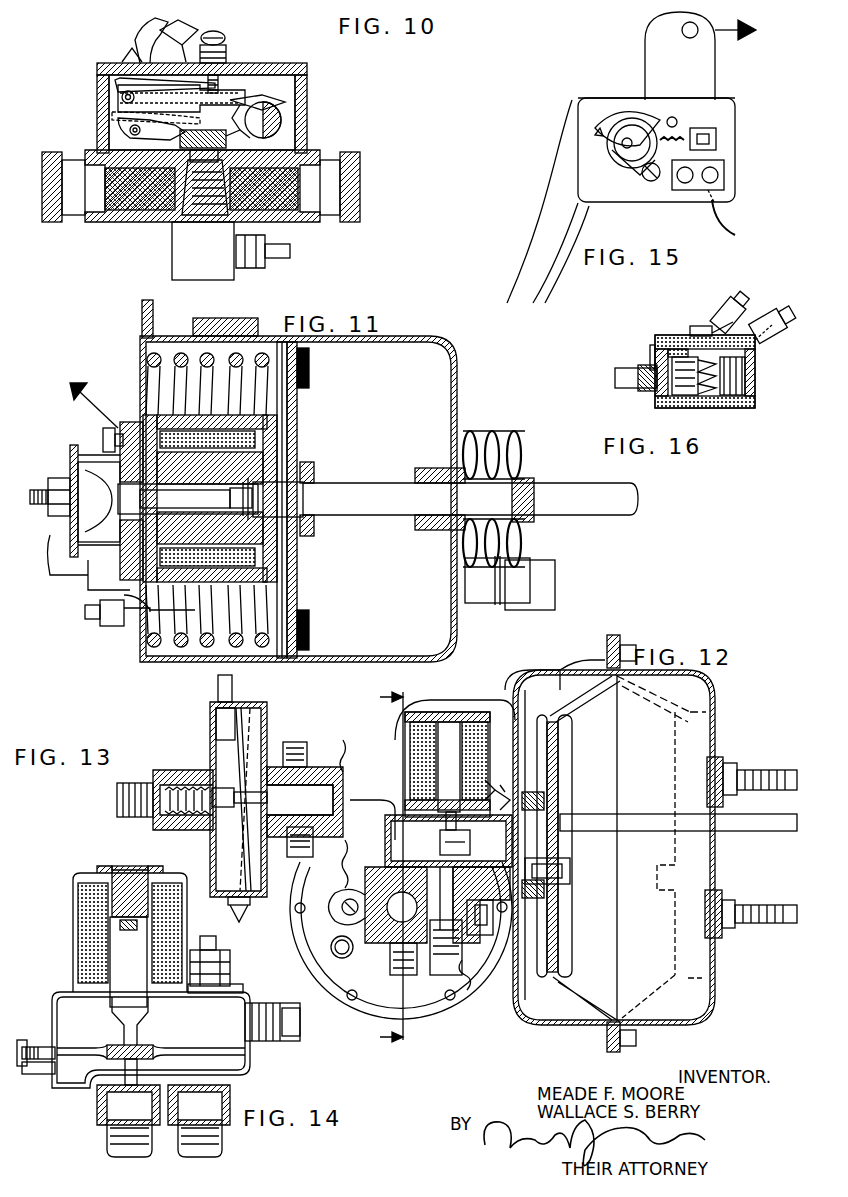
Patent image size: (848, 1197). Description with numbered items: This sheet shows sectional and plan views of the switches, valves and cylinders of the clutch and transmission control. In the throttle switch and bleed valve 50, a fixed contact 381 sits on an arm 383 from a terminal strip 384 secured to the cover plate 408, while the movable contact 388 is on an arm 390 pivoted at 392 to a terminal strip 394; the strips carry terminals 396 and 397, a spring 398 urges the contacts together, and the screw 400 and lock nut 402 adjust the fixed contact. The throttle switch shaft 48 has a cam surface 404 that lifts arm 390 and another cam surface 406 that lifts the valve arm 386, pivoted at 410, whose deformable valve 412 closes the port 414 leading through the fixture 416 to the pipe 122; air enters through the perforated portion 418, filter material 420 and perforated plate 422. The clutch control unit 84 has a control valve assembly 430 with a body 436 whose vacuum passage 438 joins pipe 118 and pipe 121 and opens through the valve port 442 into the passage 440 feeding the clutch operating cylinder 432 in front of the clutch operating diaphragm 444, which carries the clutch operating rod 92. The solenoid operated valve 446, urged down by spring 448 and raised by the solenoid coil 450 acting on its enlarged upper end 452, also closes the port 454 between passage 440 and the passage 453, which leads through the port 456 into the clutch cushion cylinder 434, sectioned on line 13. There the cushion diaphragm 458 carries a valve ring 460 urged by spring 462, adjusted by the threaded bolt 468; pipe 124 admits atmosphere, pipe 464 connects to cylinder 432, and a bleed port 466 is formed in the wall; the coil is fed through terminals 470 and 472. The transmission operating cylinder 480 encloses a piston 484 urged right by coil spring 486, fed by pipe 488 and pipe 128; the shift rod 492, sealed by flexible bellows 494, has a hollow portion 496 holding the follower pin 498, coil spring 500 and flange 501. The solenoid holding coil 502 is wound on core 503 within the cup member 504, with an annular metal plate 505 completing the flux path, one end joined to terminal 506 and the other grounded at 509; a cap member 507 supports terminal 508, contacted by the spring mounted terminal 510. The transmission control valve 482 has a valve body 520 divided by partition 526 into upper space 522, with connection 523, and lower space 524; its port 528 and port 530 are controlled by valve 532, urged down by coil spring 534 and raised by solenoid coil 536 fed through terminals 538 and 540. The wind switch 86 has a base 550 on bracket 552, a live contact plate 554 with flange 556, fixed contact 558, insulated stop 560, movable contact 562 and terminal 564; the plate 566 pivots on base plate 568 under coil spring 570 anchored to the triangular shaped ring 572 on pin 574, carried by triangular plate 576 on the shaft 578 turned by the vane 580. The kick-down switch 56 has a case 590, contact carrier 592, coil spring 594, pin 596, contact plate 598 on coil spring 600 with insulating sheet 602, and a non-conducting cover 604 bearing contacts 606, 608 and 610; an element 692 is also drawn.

In FIG. 10, the throttle switch shaft 48 is at (284, 118).
In FIG. 10, the throttle switch and bleed valve 50 is at (305, 86).
In FIG. 16, the kick-down switch 56 is at (665, 345).
In FIG. 12, the clutch control unit 84 is at (673, 636).
In FIG. 15, the wind switch 86 is at (646, 72).
In FIG. 12, the clutch operating rod 92 is at (718, 820).
In FIG. 12, the pipe 118 is at (465, 965).
In FIG. 14, the pipe 121 is at (115, 1140).
In FIG. 12, the pipe 121 is at (470, 985).
In FIG. 10, the pipe 122 is at (290, 250).
In FIG. 13, the pipe 122 is at (304, 850).
In FIG. 12, the pipe 122 is at (400, 968).
In FIG. 13, the pipe 124 is at (248, 908).
In FIG. 12, the pipe 124 is at (348, 955).
In FIG. 11, the pipe 128 is at (548, 588).
In FIG. 14, the pipe 128 is at (292, 1040).
In FIG. 12, the section line 13 is at (414, 861).
In FIG. 10, the fixed contact 381 is at (222, 140).
In FIG. 10, the arm 383 is at (156, 119).
In FIG. 10, the terminal strip 384 is at (97, 66).
In FIG. 10, the valve arm 386 is at (272, 63).
In FIG. 10, the movable contact 388 is at (250, 96).
In FIG. 10, the arm 390 is at (305, 78).
In FIG. 10, the pivot 392 is at (97, 82).
In FIG. 10, the terminal strip 394 is at (109, 98).
In FIG. 10, the terminal 396 is at (192, 24).
In FIG. 10, the terminal 397 is at (138, 32).
In FIG. 10, the spring 398 is at (122, 62).
In FIG. 10, the screw 400 is at (228, 40).
In FIG. 10, the lock nut 402 is at (228, 52).
In FIG. 10, the cam surface 404 is at (283, 104).
In FIG. 10, the cam surface 406 is at (295, 140).
In FIG. 10, the cover plate 408 is at (270, 75).
In FIG. 10, the pivot 410 is at (109, 118).
In FIG. 10, the valve 412 is at (112, 134).
In FIG. 10, the port 414 is at (203, 215).
In FIG. 10, the fixture 416 is at (185, 260).
In FIG. 10, the perforated portion 418 is at (98, 215).
In FIG. 10, the filter material 420 is at (142, 212).
In FIG. 10, the perforated plate 422 is at (130, 215).
In FIG. 12, the control valve assembly 430 is at (505, 695).
In FIG. 12, the clutch operating cylinder 432 is at (716, 702).
In FIG. 13, the clutch cushion cylinder 434 is at (268, 708).
In FIG. 12, the clutch cushion cylinder 434 is at (372, 1008).
In FIG. 13, the valve body 436 is at (332, 760).
In FIG. 12, the valve body 436 is at (432, 965).
In FIG. 12, the vacuum passage 438 is at (427, 910).
In FIG. 12, the passage 440 is at (565, 872).
In FIG. 12, the valve port 442 is at (468, 856).
In FIG. 12, the clutch operating diaphragm 444 is at (562, 722).
In FIG. 12, the solenoid operated valve 446 is at (452, 845).
In FIG. 12, the spring 448 is at (445, 712).
In FIG. 12, the solenoid coil 450 is at (535, 722).
In FIG. 12, the enlarged upper end 452 is at (449, 767).
In FIG. 13, the passage 453 is at (318, 814).
In FIG. 12, the passage 453 is at (385, 905).
In FIG. 12, the port 454 is at (448, 841).
In FIG. 13, the port 456 is at (290, 745).
In FIG. 13, the cushion diaphragm 458 is at (216, 724).
In FIG. 13, the valve ring 460 is at (218, 756).
In FIG. 13, the spring 462 is at (216, 785).
In FIG. 13, the pipe 464 is at (222, 695).
In FIG. 12, the pipe 464 is at (565, 672).
In FIG. 13, the bleed port 466 is at (212, 845).
In FIG. 13, the threaded bolt 468 is at (140, 815).
In FIG. 12, the terminal 470 is at (503, 788).
In FIG. 12, the terminal 472 is at (404, 781).
In FIG. 11, the transmission operating cylinder 480 is at (455, 392).
In FIG. 14, the transmission control valve 482 is at (75, 940).
In FIG. 11, the piston 484 is at (288, 426).
In FIG. 11, the coil spring 486 is at (142, 345).
In FIG. 11, the pipe 488 is at (72, 572).
In FIG. 14, the pipe 488 is at (185, 1148).
In FIG. 11, the shift rod 492 is at (405, 512).
In FIG. 11, the flexible bellows 494 is at (490, 430).
In FIG. 11, the hollow portion 496 is at (273, 499).
In FIG. 11, the follower pin 498 is at (188, 499).
In FIG. 11, the coil spring 500 is at (207, 498).
In FIG. 11, the flange 501 is at (232, 511).
In FIG. 11, the solenoid holding coil 502 is at (250, 410).
In FIG. 11, the core 503 is at (210, 498).
In FIG. 11, the cup member 504 is at (300, 400).
In FIG. 11, the annular metal plate 505 is at (290, 446).
In FIG. 11, the terminal 506 is at (102, 620).
In FIG. 11, the cap member 507 is at (104, 438).
In FIG. 11, the terminal 508 is at (58, 478).
In FIG. 11, the ground connection 509 is at (152, 430).
In FIG. 11, the spring mounted terminal 510 is at (140, 540).
In FIG. 14, the valve body 520 is at (55, 1030).
In FIG. 14, the upper space 522 is at (151, 1040).
In FIG. 14, the connection 523 is at (272, 1008).
In FIG. 14, the lower space 524 is at (225, 1075).
In FIG. 14, the partition 526 is at (108, 1048).
In FIG. 14, the port 528 is at (109, 1021).
In FIG. 14, the port 530 is at (110, 1068).
In FIG. 14, the valve 532 is at (172, 1045).
In FIG. 14, the coil spring 534 is at (95, 872).
In FIG. 14, the solenoid coil 536 is at (78, 965).
In FIG. 14, the terminal 538 is at (192, 940).
In FIG. 14, the terminal 540 is at (225, 958).
In FIG. 15, the base 550 is at (735, 110).
In FIG. 15, the bracket 552 is at (715, 58).
In FIG. 15, the live contact plate 554 is at (722, 162).
In FIG. 15, the upstanding flange 556 is at (720, 125).
In FIG. 15, the fixed contact 558 is at (672, 130).
In FIG. 15, the insulated stop 560 is at (722, 185).
In FIG. 15, the movable contact 562 is at (718, 140).
In FIG. 15, the terminal 564 is at (735, 235).
In FIG. 15, the plate 566 is at (725, 175).
In FIG. 15, the base plate 568 is at (652, 200).
In FIG. 15, the coil spring 570 is at (645, 110).
In FIG. 15, the triangular shaped ring 572 is at (600, 120).
In FIG. 15, the pin 574 is at (582, 118).
In FIG. 15, the triangular plate 576 is at (598, 142).
In FIG. 15, the shaft 578 is at (610, 165).
In FIG. 15, the vane 580 is at (550, 232).
In FIG. 16, the case 590 is at (755, 405).
In FIG. 16, the contact carrier 592 is at (722, 408).
In FIG. 16, the coil spring 594 is at (755, 392).
In FIG. 16, the pin 596 is at (620, 375).
In FIG. 16, the contact plate 598 is at (655, 352).
In FIG. 16, the coil spring 600 is at (693, 408).
In FIG. 16, the insulating sheet 602 is at (748, 372).
In FIG. 16, the non-conducting cover 604 is at (700, 330).
In FIG. 16, the contact 606 is at (728, 308).
In FIG. 16, the contact 608 is at (770, 315).
In FIG. 16, the contact 610 is at (760, 350).
In FIG. 11, the plate 692 is at (72, 460).